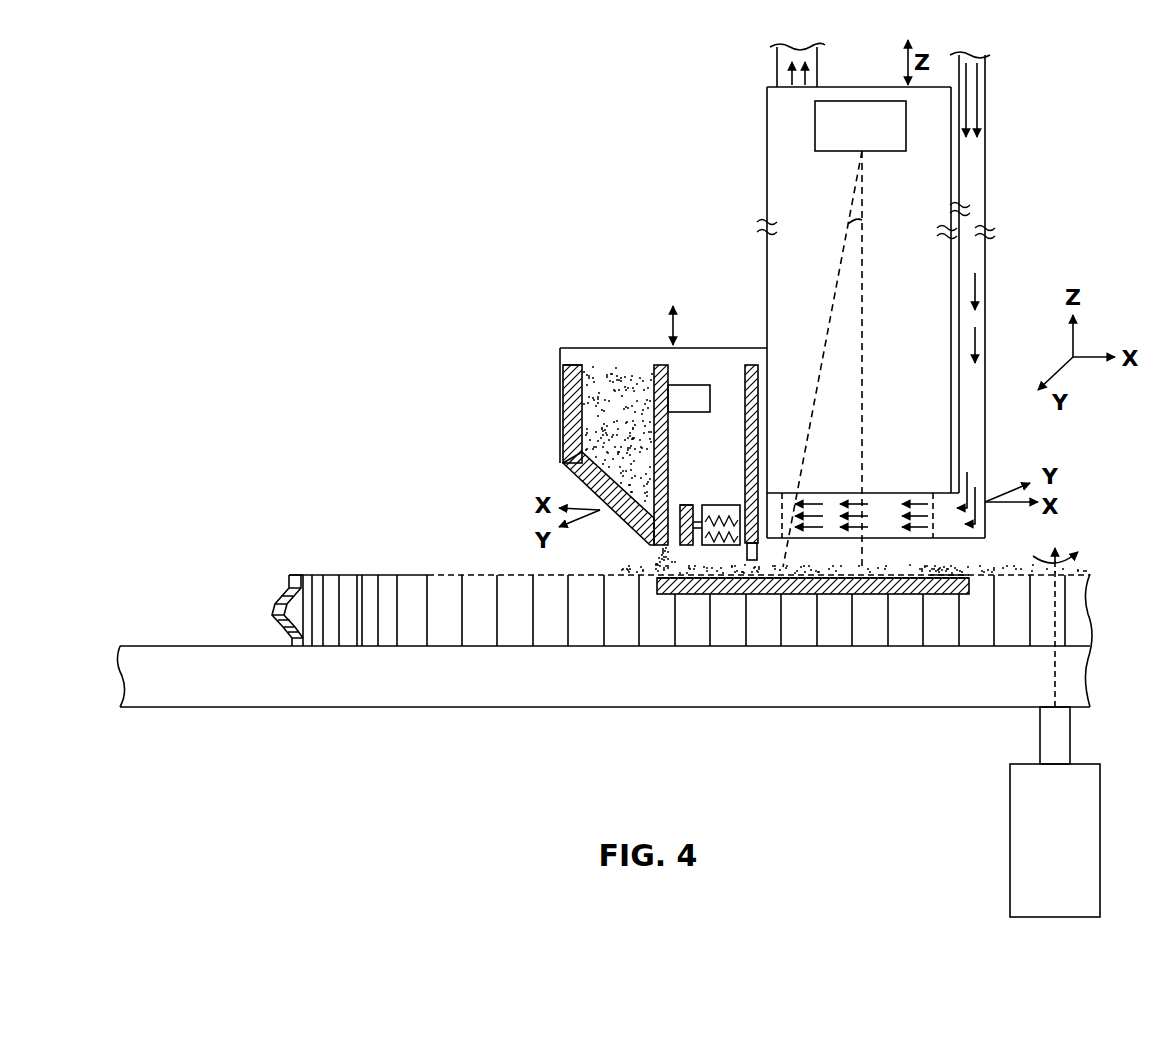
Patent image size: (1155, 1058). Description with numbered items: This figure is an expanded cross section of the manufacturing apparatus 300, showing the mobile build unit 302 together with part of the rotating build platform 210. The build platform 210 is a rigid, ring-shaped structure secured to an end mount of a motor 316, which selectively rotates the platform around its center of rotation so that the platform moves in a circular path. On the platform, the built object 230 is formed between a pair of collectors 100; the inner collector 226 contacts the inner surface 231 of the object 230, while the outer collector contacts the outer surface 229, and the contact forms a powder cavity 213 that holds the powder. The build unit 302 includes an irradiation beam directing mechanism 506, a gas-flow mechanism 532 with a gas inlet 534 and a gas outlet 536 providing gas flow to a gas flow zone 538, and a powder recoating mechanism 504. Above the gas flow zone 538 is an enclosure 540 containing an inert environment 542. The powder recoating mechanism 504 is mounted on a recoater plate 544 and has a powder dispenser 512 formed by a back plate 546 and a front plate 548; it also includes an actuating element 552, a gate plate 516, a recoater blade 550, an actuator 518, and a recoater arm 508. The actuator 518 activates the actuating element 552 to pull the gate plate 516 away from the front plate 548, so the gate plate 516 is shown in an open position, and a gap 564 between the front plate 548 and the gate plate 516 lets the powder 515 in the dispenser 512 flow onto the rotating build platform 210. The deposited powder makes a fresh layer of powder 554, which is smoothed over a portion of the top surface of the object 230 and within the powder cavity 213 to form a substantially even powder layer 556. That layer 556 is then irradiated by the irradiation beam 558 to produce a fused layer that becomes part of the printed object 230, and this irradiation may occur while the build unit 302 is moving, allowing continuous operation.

The collectors 100 is at (878, 598).
The rotating build platform 210 is at (315, 688).
The powder cavity 213 is at (598, 454).
The inner collector 226 is at (845, 598).
The outer surface 229 is at (283, 597).
The built object 230 is at (295, 580).
The inner surface 231 is at (442, 612).
The manufacturing apparatus 300 is at (502, 168).
The build unit 302 is at (722, 82).
The motor 316 is at (1087, 850).
The powder recoating mechanism 504 is at (757, 262).
The irradiation beam directing mechanism 506 is at (852, 125).
The recoater arm 508 is at (752, 368).
The powder dispenser 512 is at (655, 321).
The powder 515 is at (655, 405).
The gate plate 516 is at (687, 505).
The actuator 518 is at (716, 546).
The gas-flow mechanism 532 is at (972, 182).
The gas inlet 534 is at (940, 505).
The gas outlet 536 is at (775, 505).
The gas flow zone 538 is at (887, 507).
The enclosure 540 is at (767, 150).
The inert environment 542 is at (787, 194).
The recoater plate 544 is at (557, 393).
The back plate 546 is at (572, 368).
The front plate 548 is at (667, 378).
The recoater blade 550 is at (752, 561).
The actuating element 552 is at (705, 413).
The fresh layer of powder 554 is at (625, 565).
The substantially even powder layer 556 is at (930, 575).
The irradiation beam 558 is at (863, 312).
The gap 564 is at (672, 546).